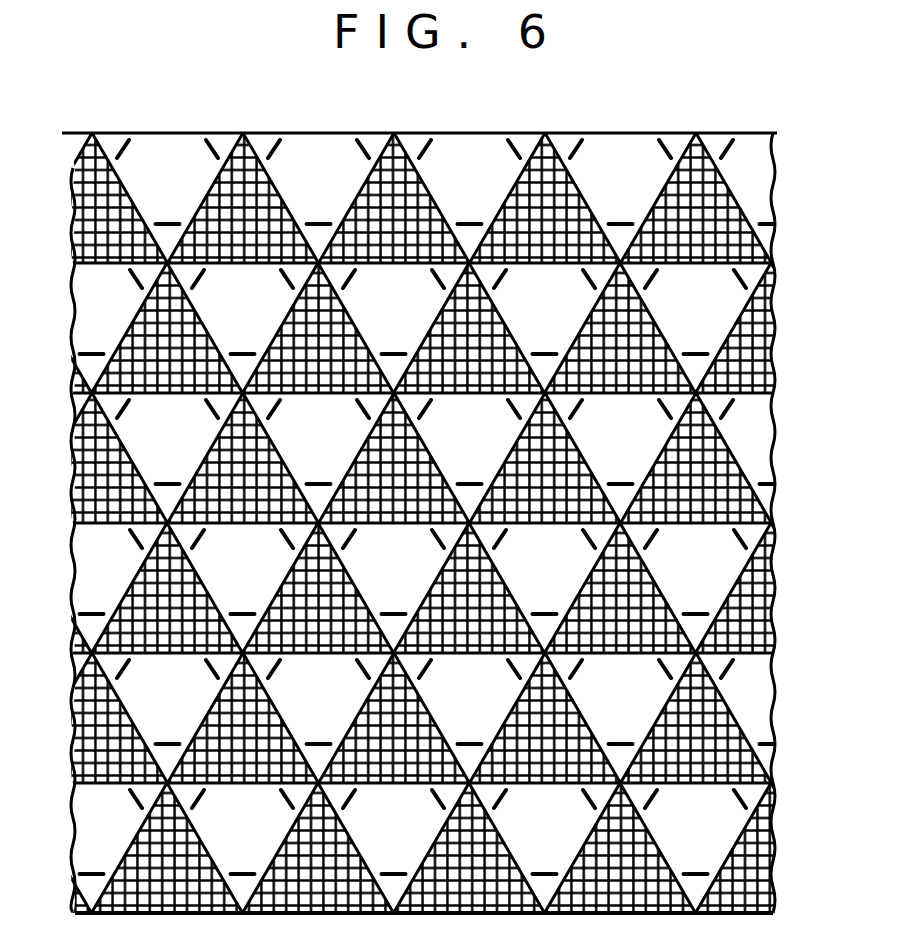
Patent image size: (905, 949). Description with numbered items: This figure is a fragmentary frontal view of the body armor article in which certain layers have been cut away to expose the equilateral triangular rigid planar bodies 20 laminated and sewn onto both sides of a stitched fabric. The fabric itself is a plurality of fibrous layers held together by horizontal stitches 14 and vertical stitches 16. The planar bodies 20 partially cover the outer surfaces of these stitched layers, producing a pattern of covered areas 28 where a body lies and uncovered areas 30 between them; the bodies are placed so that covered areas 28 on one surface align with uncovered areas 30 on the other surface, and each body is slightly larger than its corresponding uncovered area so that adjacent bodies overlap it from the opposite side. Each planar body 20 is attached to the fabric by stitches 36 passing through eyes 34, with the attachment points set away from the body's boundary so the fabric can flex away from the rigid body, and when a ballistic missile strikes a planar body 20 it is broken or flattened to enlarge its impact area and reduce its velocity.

The horizontal stitches 14 is at (100, 643).
The vertical stitches 16 is at (771, 870).
The planar body 20 is at (423, 498).
The covered area 28 is at (492, 131).
The uncovered area 30 is at (775, 563).
The eyes 34 is at (209, 138).
The stitches 36 is at (122, 138).